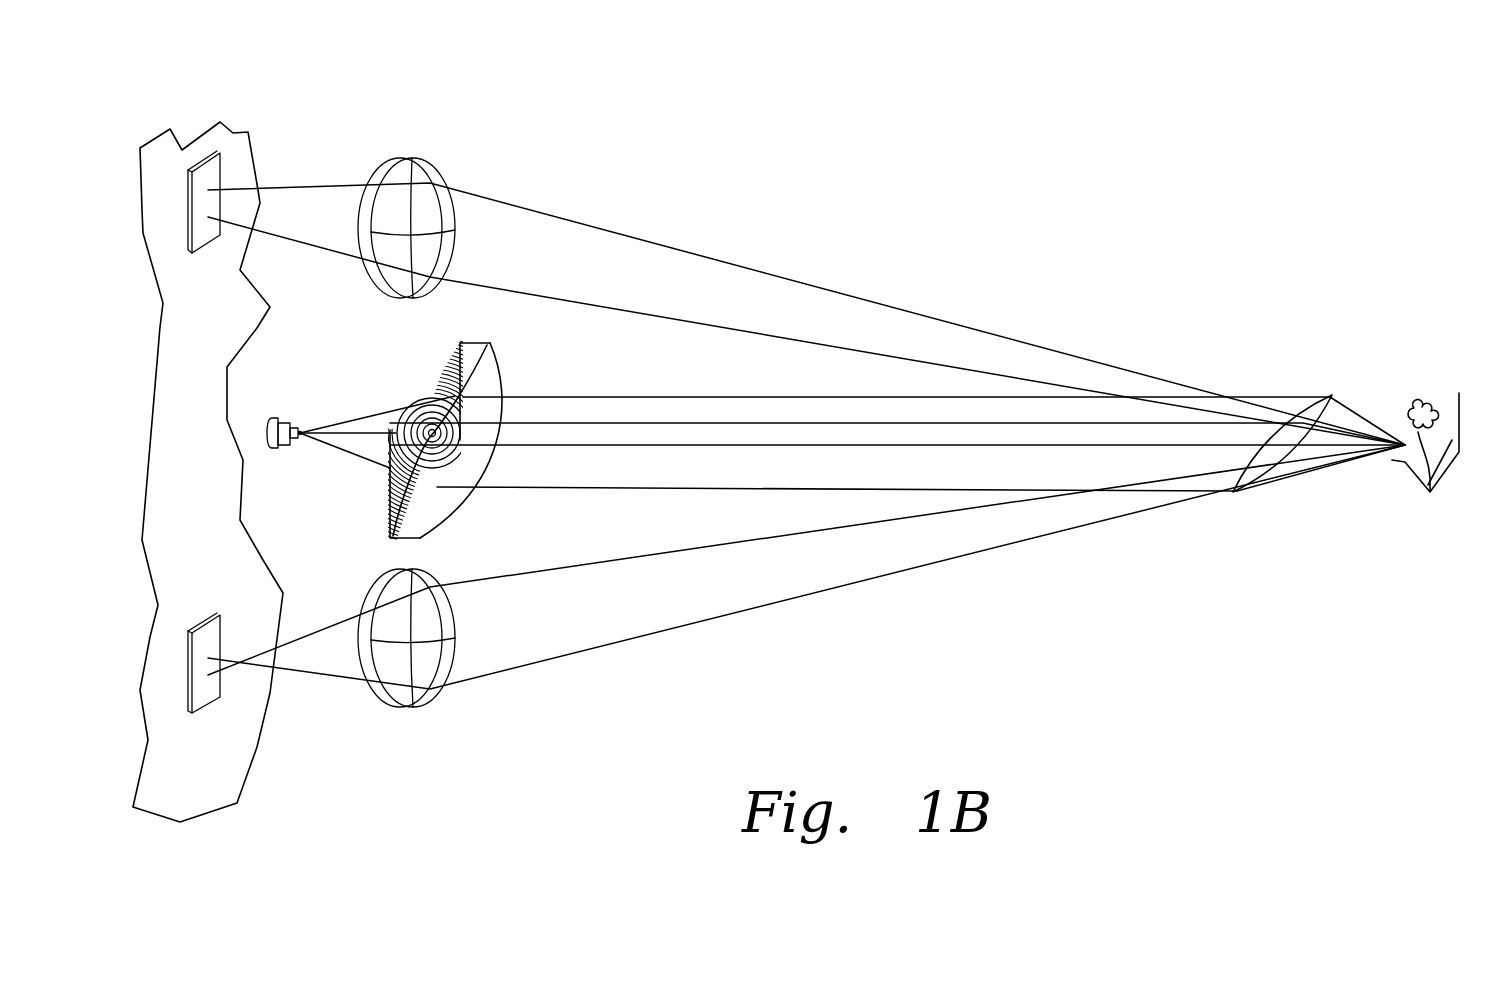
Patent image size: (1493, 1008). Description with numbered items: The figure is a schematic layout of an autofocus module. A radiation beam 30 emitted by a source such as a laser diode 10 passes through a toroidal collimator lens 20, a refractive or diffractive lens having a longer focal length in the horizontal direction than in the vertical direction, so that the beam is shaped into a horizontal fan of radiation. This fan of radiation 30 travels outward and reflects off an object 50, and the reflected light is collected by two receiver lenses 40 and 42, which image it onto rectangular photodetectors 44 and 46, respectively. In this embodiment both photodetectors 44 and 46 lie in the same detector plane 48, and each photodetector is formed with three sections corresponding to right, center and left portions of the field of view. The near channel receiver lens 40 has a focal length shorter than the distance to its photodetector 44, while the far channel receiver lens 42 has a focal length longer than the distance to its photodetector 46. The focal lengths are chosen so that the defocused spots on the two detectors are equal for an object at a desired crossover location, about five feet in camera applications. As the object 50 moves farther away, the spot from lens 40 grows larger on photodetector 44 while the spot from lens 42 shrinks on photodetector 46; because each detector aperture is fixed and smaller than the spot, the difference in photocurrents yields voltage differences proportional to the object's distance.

The laser diode 10 is at (280, 417).
The toroidal collimator lens 20 is at (441, 370).
The radiation beam 30 is at (687, 402).
The near channel receiver lens 40 is at (411, 708).
The far channel receiver lens 42 is at (421, 158).
The near channel photodetector 44 is at (211, 708).
The far channel photodetector 46 is at (208, 150).
The detector plane 48 is at (237, 141).
The object 50 is at (1437, 402).